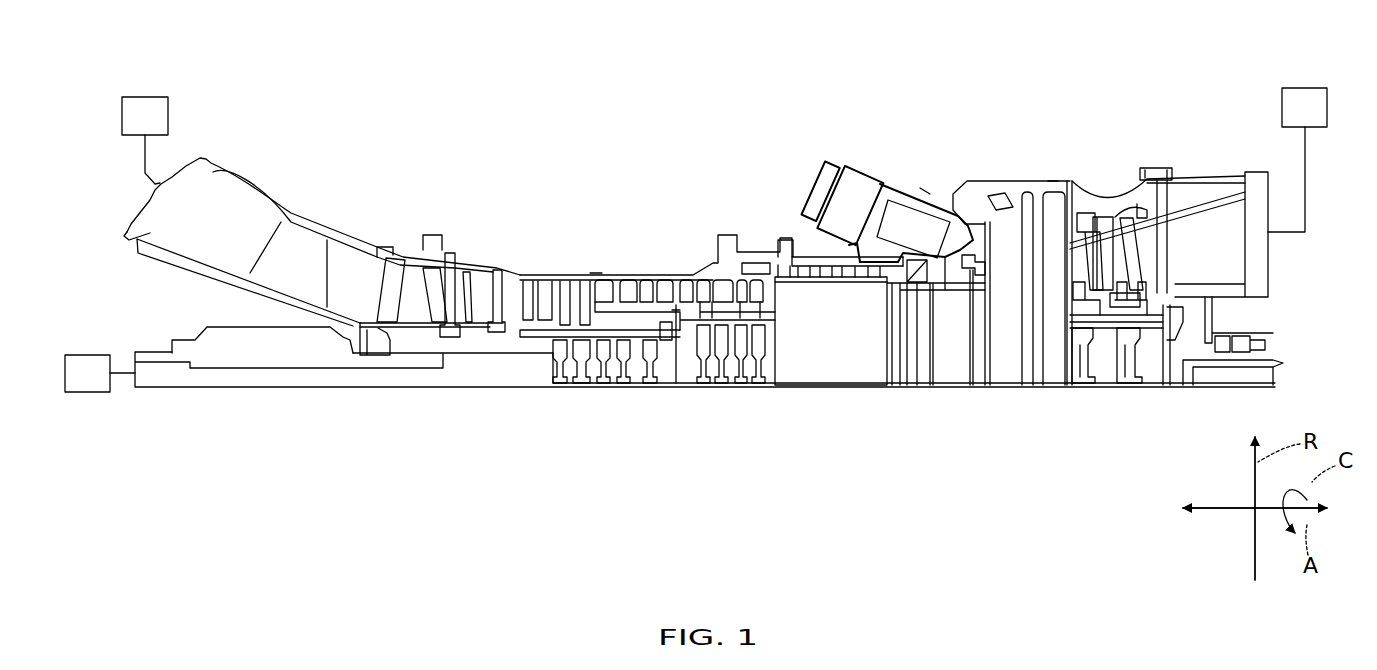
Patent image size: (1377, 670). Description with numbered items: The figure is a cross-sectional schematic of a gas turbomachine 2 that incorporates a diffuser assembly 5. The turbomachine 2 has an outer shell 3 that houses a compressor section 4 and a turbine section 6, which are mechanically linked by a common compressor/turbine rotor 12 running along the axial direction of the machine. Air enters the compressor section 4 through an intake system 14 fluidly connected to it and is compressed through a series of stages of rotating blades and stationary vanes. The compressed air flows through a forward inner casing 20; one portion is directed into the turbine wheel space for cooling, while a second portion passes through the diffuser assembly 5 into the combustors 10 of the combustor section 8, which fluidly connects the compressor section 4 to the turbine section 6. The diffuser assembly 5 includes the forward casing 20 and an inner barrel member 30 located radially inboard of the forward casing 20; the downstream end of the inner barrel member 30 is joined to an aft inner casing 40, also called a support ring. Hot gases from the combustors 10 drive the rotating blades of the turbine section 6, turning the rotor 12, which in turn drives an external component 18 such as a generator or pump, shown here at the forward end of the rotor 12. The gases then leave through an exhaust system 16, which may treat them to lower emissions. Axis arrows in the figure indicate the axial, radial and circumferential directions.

The turbomachine 2 is at (470, 116).
The outer shell 3 is at (596, 273).
The compressor section 4 is at (578, 398).
The diffuser assembly 5 is at (877, 346).
The turbine section 6 is at (1162, 400).
The combustor section 8 is at (800, 165).
The combustor 10 is at (855, 193).
The compressor/turbine rotor 12 is at (676, 388).
The intake system 14 is at (145, 96).
The exhaust system 16 is at (1305, 87).
The external component 18 is at (88, 353).
The forward inner casing 20 is at (920, 277).
The inner barrel member 30 is at (962, 295).
The aft inner casing 40 is at (974, 250).